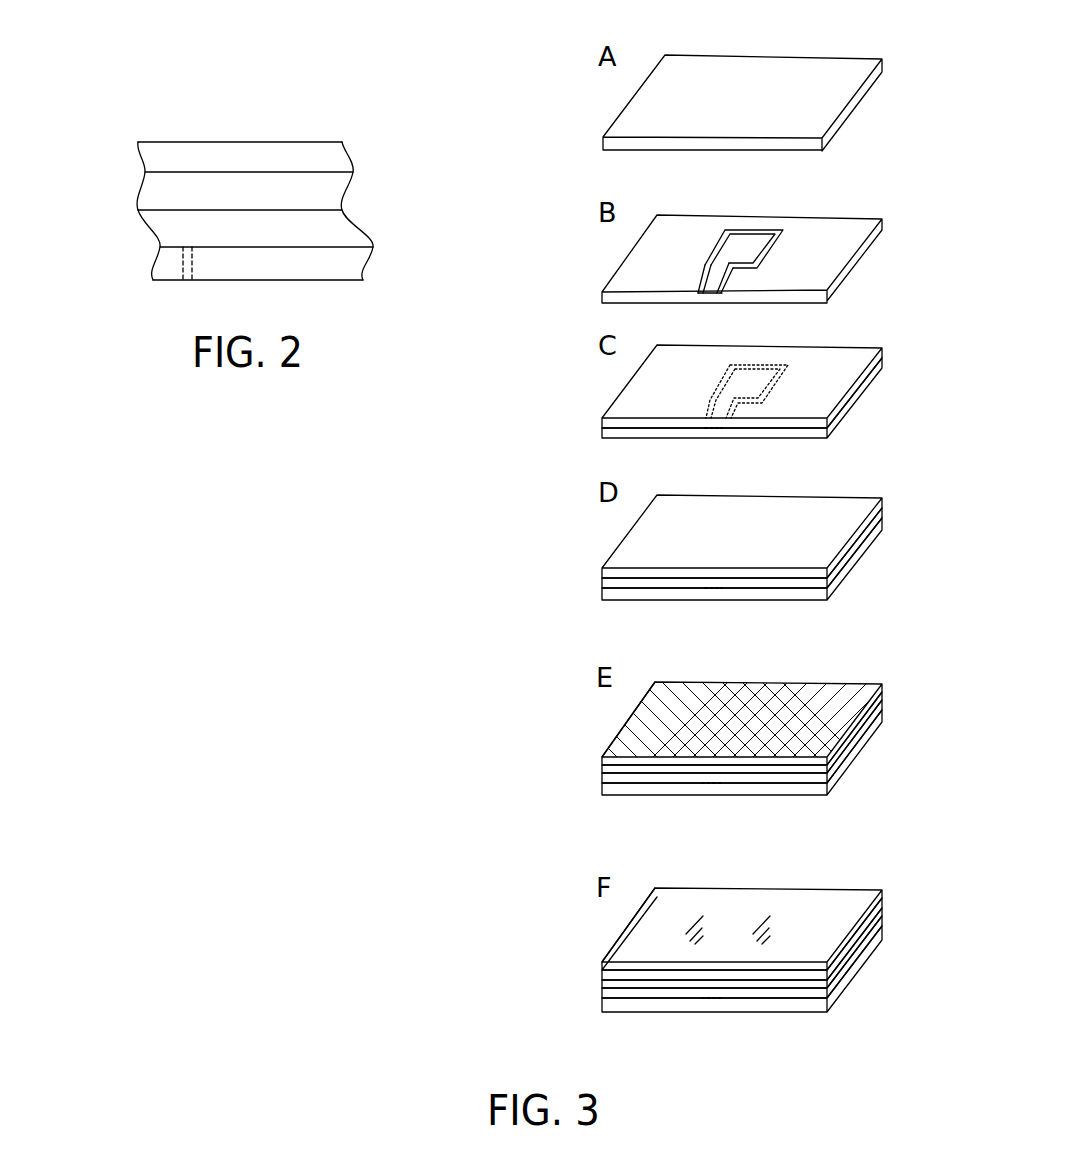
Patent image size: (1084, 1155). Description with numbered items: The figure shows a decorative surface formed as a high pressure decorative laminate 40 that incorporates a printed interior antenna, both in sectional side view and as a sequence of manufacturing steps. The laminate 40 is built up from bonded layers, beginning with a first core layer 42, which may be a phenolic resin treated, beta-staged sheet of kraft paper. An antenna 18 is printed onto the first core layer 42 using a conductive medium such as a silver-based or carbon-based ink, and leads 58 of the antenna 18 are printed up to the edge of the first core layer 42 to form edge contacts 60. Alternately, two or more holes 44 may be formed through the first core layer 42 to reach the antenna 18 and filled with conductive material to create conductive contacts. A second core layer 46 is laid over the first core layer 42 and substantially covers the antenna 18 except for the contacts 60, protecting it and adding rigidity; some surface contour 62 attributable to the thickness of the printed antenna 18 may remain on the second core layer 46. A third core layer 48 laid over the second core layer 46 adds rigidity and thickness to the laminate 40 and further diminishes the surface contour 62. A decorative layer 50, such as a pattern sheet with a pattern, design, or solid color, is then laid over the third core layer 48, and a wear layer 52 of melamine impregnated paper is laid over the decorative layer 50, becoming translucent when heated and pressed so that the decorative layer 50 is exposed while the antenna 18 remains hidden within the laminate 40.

In FIG. 3, the antenna 18 is at (743, 230).
In FIG. 2, the high pressure decorative laminate 40 is at (117, 220).
In FIG. 3, the high pressure decorative laminate 40 is at (579, 725).
In FIG. 2, the first core layer 42 is at (370, 272).
In FIG. 3, the first core layer 42 is at (858, 97).
In FIG. 2, the holes 44 is at (188, 283).
In FIG. 2, the second core layer 46 is at (373, 247).
In FIG. 3, the second core layer 46 is at (868, 373).
In FIG. 2, the third core layer 48 is at (347, 196).
In FIG. 3, the third core layer 48 is at (867, 523).
In FIG. 2, the decorative layer 50 is at (353, 160).
In FIG. 3, the decorative layer 50 is at (878, 697).
In FIG. 2, the wear layer 52 is at (247, 141).
In FIG. 3, the wear layer 52 is at (882, 897).
In FIG. 3, the leads 58 is at (730, 283).
In FIG. 3, the edge contacts 60 is at (705, 292).
In FIG. 3, the surface contour 62 is at (712, 397).